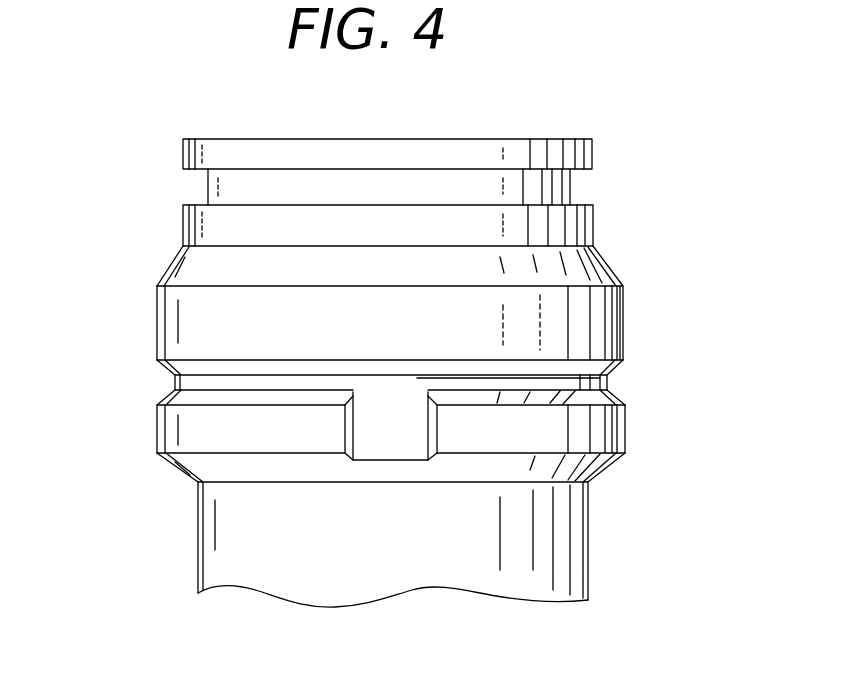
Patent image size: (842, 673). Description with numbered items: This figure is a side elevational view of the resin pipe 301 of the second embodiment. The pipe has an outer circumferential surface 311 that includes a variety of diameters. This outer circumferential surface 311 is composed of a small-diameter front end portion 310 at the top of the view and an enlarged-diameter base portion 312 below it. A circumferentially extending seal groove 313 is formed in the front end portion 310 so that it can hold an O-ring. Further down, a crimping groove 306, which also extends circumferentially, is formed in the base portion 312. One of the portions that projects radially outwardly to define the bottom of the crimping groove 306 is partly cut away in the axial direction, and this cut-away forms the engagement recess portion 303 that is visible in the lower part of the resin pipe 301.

The resin pipe 301 is at (353, 126).
The small-diameter front end portion 310 is at (592, 153).
The seal groove 313 is at (562, 190).
The enlarged-diameter base portion 312 is at (625, 323).
The outer circumferential surface 311 is at (138, 336).
The crimping groove 306 is at (607, 381).
The engagement recess portion 303 is at (385, 448).